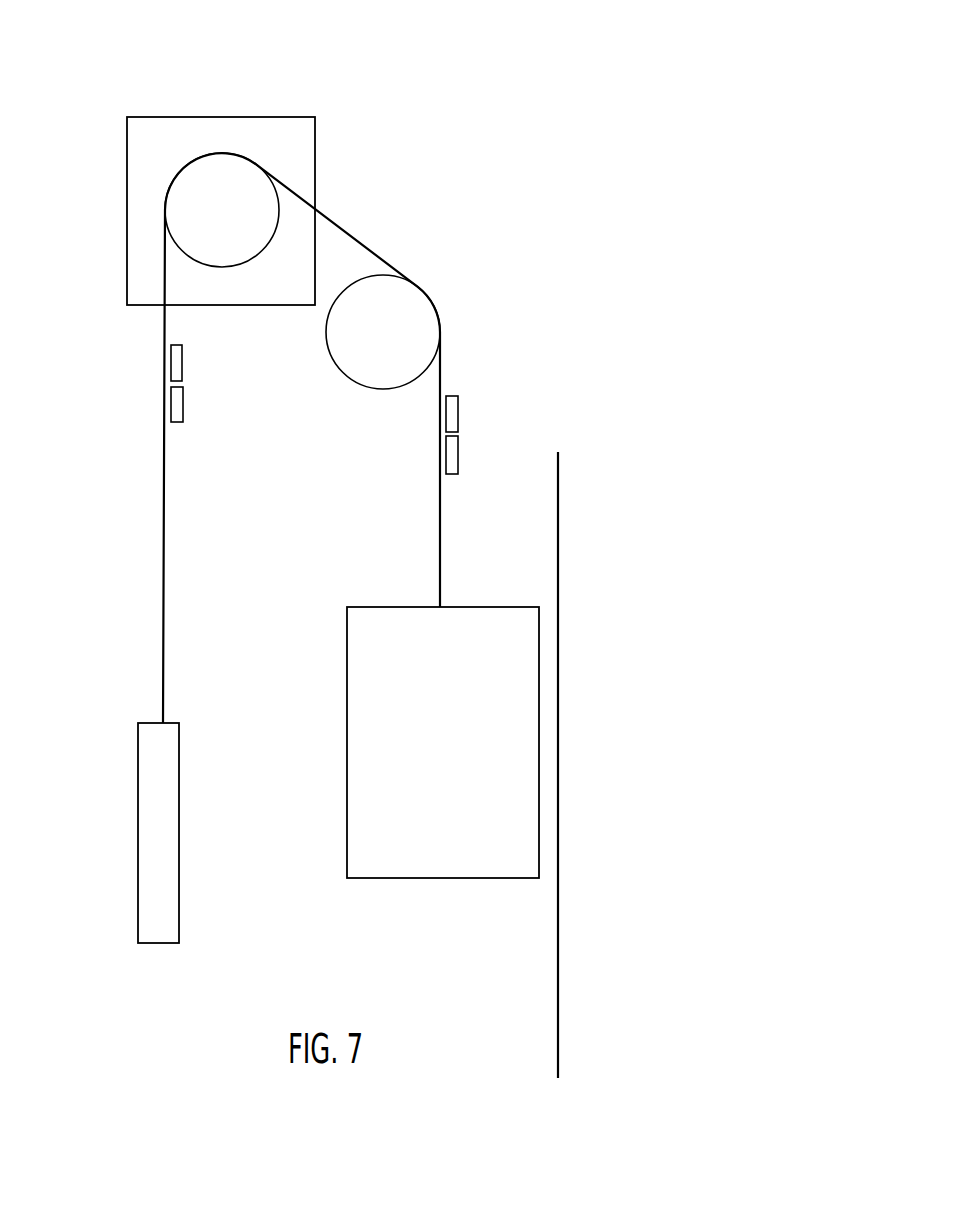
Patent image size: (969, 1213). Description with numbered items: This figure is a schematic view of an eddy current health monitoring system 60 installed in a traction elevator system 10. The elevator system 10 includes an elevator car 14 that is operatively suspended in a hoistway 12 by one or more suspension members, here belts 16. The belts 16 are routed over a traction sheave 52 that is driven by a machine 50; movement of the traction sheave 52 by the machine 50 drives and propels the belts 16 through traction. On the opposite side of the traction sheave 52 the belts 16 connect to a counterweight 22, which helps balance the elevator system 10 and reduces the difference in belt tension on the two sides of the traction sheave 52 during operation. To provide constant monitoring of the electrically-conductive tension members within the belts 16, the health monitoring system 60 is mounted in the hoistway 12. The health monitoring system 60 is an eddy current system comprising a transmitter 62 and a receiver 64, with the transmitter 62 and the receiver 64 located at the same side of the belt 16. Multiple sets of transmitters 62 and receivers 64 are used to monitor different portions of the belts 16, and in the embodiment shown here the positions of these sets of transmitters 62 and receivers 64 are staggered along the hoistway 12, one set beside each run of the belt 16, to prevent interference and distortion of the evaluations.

The elevator system 10 is at (347, 70).
The hoistway 12 is at (559, 498).
The elevator car 14 is at (444, 754).
The belt 16 is at (148, 509).
The counterweight 22 is at (169, 842).
The machine 50 is at (126, 213).
The traction sheave 52 is at (233, 222).
The health monitoring system 60 is at (628, 225).
The transmitter 62 is at (176, 366).
The receiver 64 is at (176, 403).